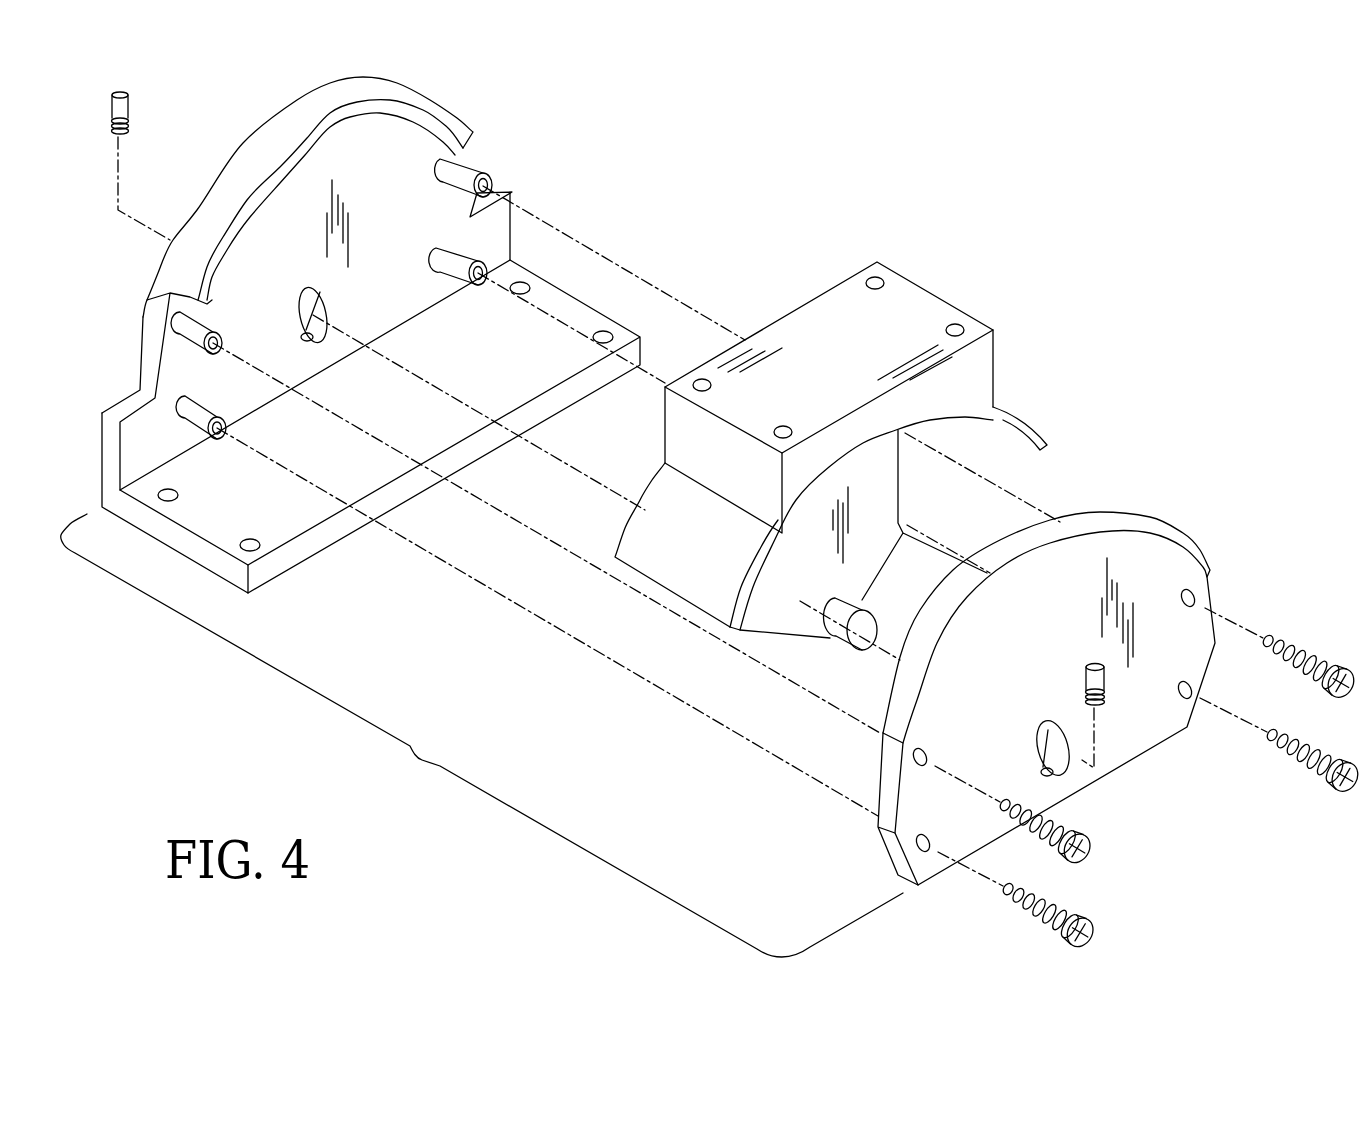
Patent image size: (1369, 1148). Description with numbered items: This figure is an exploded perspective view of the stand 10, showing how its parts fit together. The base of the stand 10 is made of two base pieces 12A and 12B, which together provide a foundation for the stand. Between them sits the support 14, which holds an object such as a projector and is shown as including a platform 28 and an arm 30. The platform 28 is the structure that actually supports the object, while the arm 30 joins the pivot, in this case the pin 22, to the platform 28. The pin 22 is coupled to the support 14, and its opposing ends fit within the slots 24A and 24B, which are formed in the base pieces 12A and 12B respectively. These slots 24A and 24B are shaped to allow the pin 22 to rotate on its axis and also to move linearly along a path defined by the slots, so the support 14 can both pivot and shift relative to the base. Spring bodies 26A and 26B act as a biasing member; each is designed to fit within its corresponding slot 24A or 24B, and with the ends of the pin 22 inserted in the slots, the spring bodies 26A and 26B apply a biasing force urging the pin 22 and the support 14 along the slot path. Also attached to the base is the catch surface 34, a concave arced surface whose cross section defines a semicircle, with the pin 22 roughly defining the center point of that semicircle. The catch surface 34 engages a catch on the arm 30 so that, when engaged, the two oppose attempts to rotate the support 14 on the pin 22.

The stand 10 is at (411, 753).
The base piece 12A is at (1143, 735).
The base piece 12B is at (148, 357).
The support 14 is at (982, 374).
The pin 22 is at (858, 633).
The slot 24A is at (1058, 763).
The slot 24B is at (320, 303).
The spring body 26A is at (1087, 682).
The spring body 26B is at (111, 104).
The platform 28 is at (927, 307).
The arm 30 is at (882, 491).
The catch surface 34 is at (347, 145).